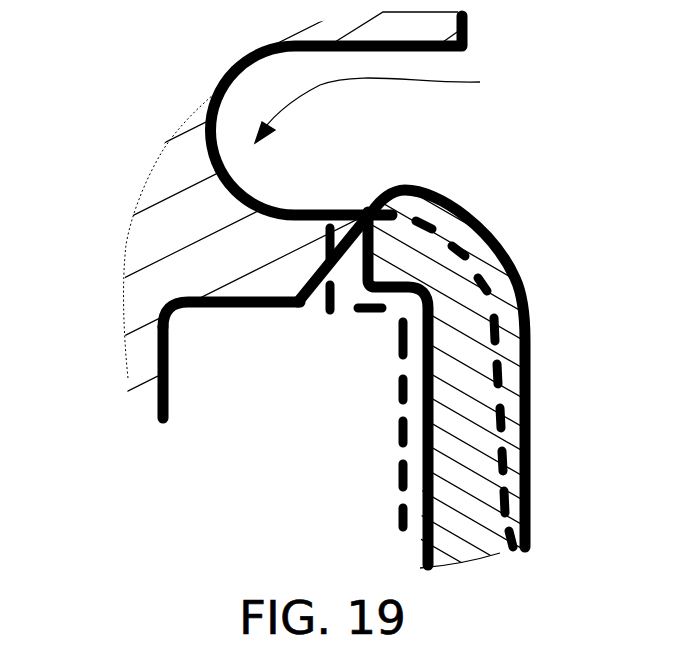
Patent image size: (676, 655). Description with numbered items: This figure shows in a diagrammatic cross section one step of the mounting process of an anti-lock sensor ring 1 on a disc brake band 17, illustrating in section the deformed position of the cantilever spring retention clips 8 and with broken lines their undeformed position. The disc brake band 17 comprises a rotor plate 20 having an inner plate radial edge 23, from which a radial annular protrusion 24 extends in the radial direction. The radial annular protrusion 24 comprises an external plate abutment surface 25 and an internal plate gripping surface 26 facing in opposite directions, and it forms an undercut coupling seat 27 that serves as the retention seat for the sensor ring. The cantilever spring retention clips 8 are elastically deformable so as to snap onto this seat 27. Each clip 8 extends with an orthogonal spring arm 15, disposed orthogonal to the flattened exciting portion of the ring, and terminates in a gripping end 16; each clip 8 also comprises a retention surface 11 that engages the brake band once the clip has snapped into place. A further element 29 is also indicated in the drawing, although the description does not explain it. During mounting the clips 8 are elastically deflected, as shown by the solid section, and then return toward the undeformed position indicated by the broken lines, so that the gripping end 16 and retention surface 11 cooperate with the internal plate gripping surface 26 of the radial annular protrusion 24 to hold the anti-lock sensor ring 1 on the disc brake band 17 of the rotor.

The anti-lock sensor ring 1 is at (526, 530).
The cantilever spring retention clips 8 is at (531, 372).
The retention surface 11 is at (382, 297).
The orthogonal spring arm 15 is at (470, 440).
The gripping end 16 is at (347, 208).
The disc brake band 17 is at (177, 235).
The rotor plate 20 is at (148, 360).
The inner plate radial edge 23 is at (170, 381).
The radial annular protrusion 24 is at (248, 252).
The external plate abutment surface 25 is at (228, 306).
The internal plate gripping surface 26 is at (303, 213).
The undercut coupling seat 27 is at (480, 82).
The inclined web 29 is at (308, 300).